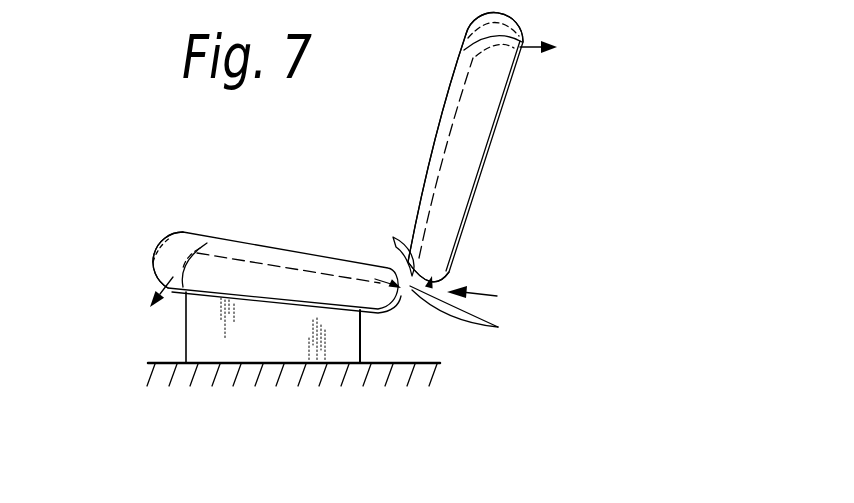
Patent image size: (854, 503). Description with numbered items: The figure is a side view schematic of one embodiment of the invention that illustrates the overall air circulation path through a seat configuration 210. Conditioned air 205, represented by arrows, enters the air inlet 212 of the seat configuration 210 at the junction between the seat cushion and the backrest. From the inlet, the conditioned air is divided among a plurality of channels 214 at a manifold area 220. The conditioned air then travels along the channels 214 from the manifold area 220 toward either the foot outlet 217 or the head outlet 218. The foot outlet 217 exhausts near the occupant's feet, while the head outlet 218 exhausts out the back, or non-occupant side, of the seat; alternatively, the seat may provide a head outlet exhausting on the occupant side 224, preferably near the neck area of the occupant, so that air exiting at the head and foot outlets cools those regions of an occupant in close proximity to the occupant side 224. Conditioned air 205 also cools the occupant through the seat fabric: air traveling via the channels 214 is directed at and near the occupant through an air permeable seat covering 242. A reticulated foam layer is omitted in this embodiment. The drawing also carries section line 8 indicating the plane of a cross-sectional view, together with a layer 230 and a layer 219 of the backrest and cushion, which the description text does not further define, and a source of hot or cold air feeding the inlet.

The seat configuration 210 is at (106, 370).
The air inlet 212 is at (404, 293).
The channels 214 is at (263, 250).
The foot outlet 217 is at (153, 287).
The head outlet 218 is at (525, 37).
The rear cover layer of backrest 219 is at (516, 70).
The manifold area 220 is at (380, 244).
The occupant side 224 is at (303, 252).
The inner cushion layer 230 is at (487, 107).
The air permeable seat covering 242 is at (227, 239).
The conditioned air 205 is at (443, 320).
The section line 8- 8 is at (426, 168).